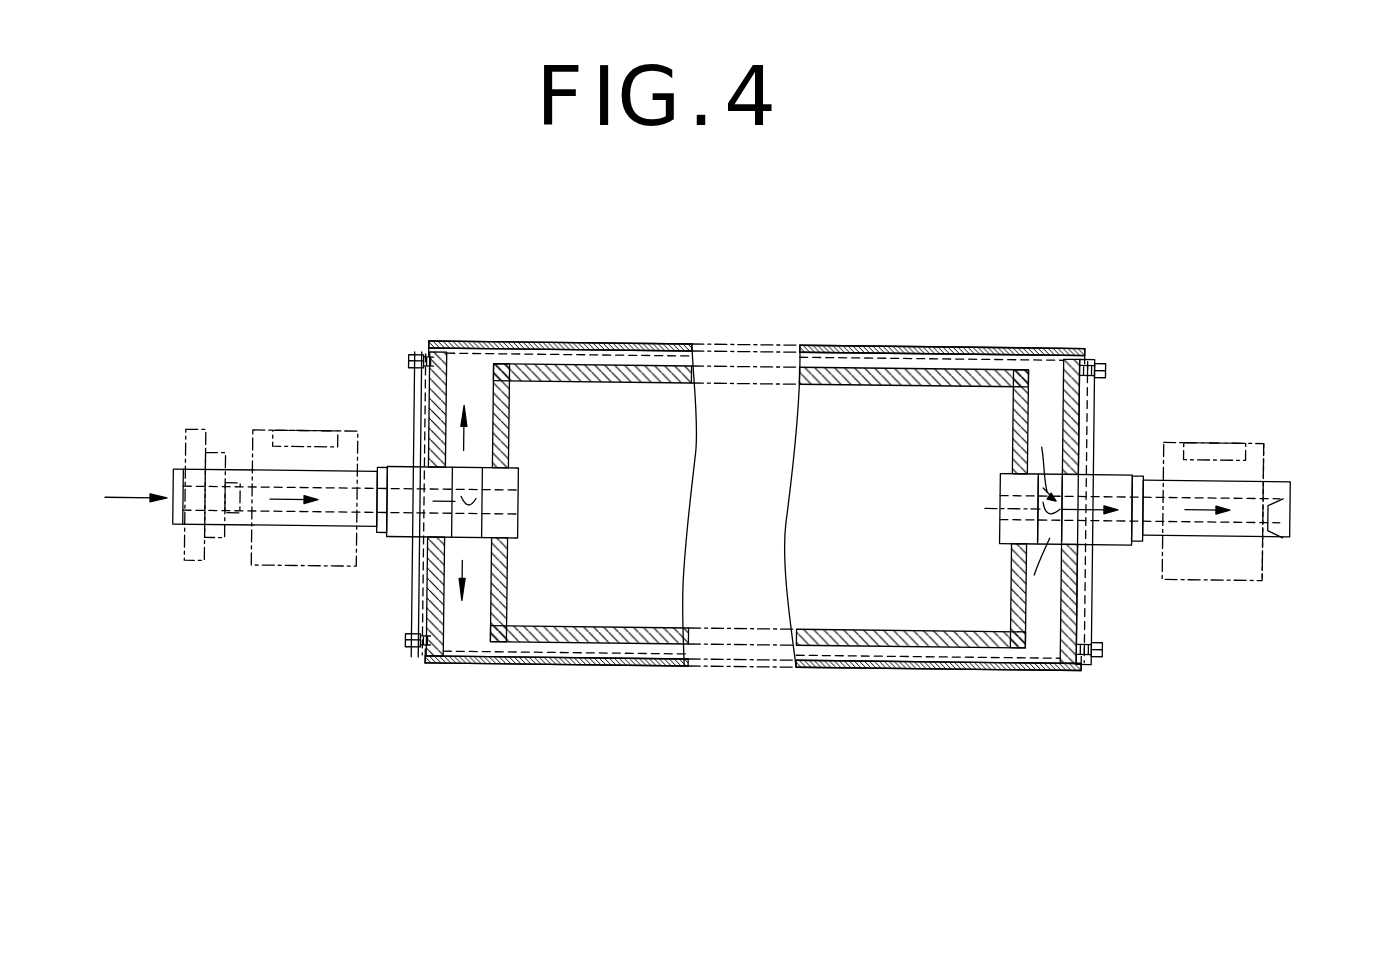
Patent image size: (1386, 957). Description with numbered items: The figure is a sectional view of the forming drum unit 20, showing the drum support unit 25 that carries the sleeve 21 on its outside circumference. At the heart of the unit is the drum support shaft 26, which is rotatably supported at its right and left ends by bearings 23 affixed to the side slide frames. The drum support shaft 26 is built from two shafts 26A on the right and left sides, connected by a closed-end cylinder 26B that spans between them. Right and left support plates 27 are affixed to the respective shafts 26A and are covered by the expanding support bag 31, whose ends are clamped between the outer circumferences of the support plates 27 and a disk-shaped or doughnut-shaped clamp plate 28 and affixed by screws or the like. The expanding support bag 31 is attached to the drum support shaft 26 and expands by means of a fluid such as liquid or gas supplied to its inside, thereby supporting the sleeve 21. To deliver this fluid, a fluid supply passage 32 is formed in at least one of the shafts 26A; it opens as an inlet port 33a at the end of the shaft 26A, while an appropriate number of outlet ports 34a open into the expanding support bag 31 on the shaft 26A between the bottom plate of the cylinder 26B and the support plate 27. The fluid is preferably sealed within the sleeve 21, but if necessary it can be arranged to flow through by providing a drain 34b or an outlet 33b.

The cooling roller apparatus 20 is at (590, 332).
The sleeve 21 is at (976, 350).
The bearings 23 is at (287, 548).
The drum support unit 25 is at (882, 366).
The drum support shaft 26 is at (1180, 722).
The shafts 26A is at (512, 529).
The closed-end cylinder 26B is at (1020, 600).
The support plates 27 is at (436, 590).
The clamp plate 28 is at (415, 562).
The expanding support bag 31 is at (483, 652).
The fluid supply passage 32 is at (313, 488).
The inlet port 33a is at (172, 498).
The outlet 33b is at (1293, 515).
The outlet ports 34a is at (468, 496).
The drain 34b is at (978, 515).